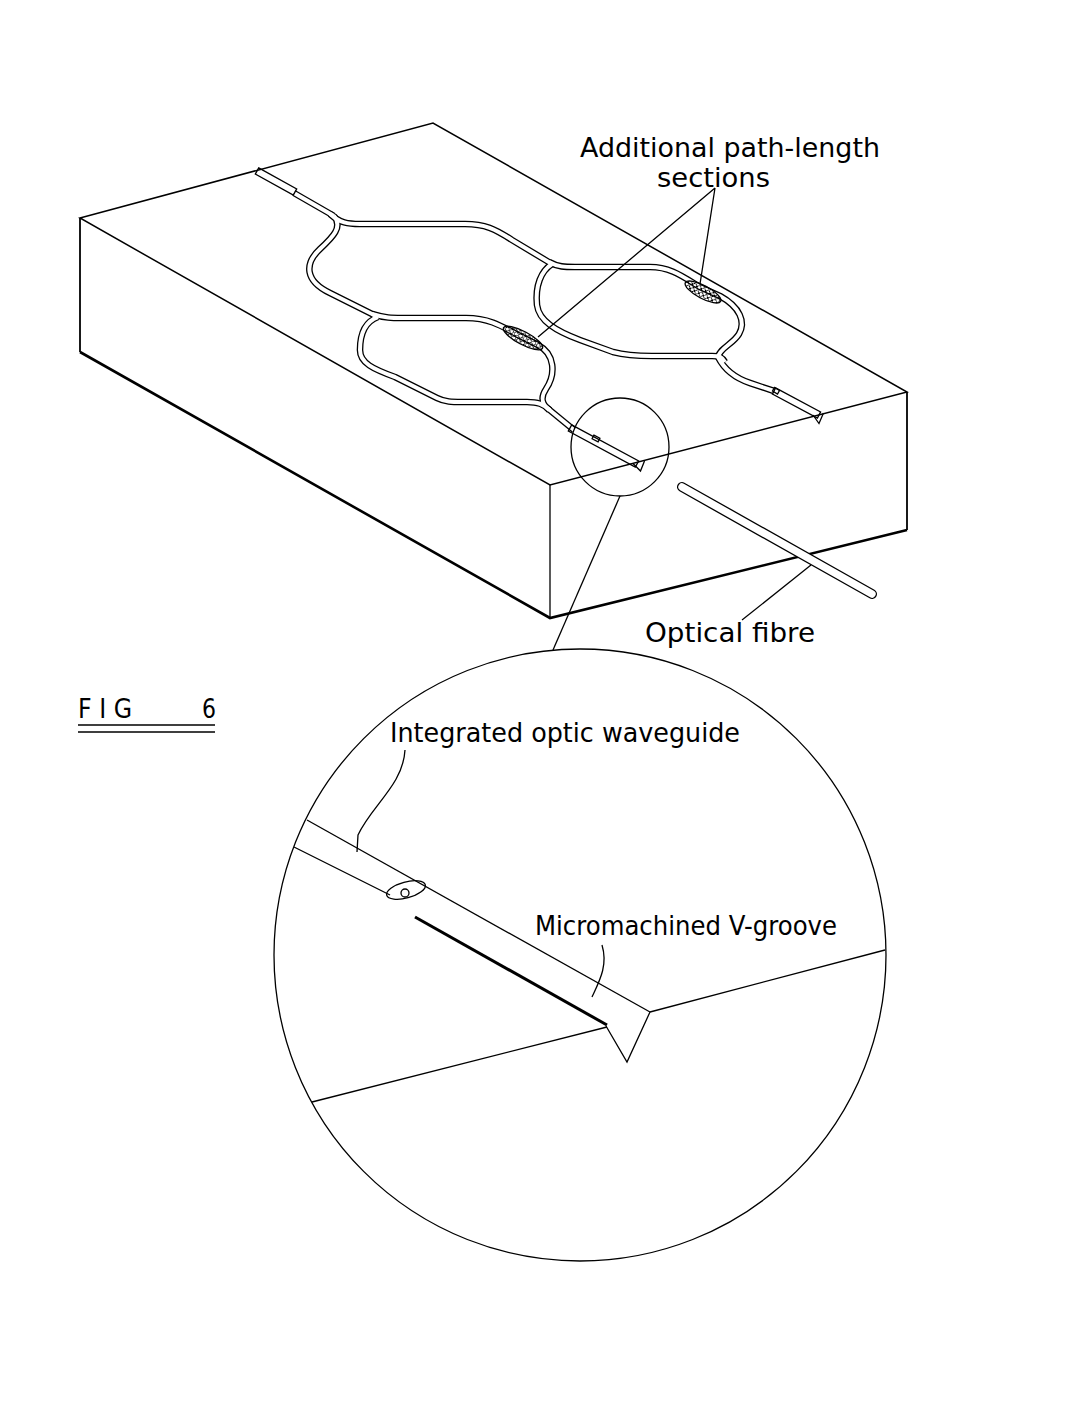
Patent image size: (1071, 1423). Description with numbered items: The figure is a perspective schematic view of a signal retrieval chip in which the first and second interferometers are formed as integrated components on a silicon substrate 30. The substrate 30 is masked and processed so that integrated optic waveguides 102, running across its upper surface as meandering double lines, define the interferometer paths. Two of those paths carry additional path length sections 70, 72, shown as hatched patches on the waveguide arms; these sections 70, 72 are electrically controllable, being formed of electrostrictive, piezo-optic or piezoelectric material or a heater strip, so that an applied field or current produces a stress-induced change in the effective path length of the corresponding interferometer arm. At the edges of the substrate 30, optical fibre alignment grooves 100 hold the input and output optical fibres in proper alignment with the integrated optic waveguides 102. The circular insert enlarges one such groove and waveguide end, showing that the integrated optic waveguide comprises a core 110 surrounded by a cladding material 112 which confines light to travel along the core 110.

The silicon substrate 30 is at (428, 498).
The additional path length section 70 is at (716, 292).
The additional path length section 72 is at (507, 337).
The optical fibre alignment grooves 100 is at (814, 420).
The integrated optic waveguides 102 is at (563, 423).
The core 110 is at (410, 890).
The cladding material 112 is at (425, 888).